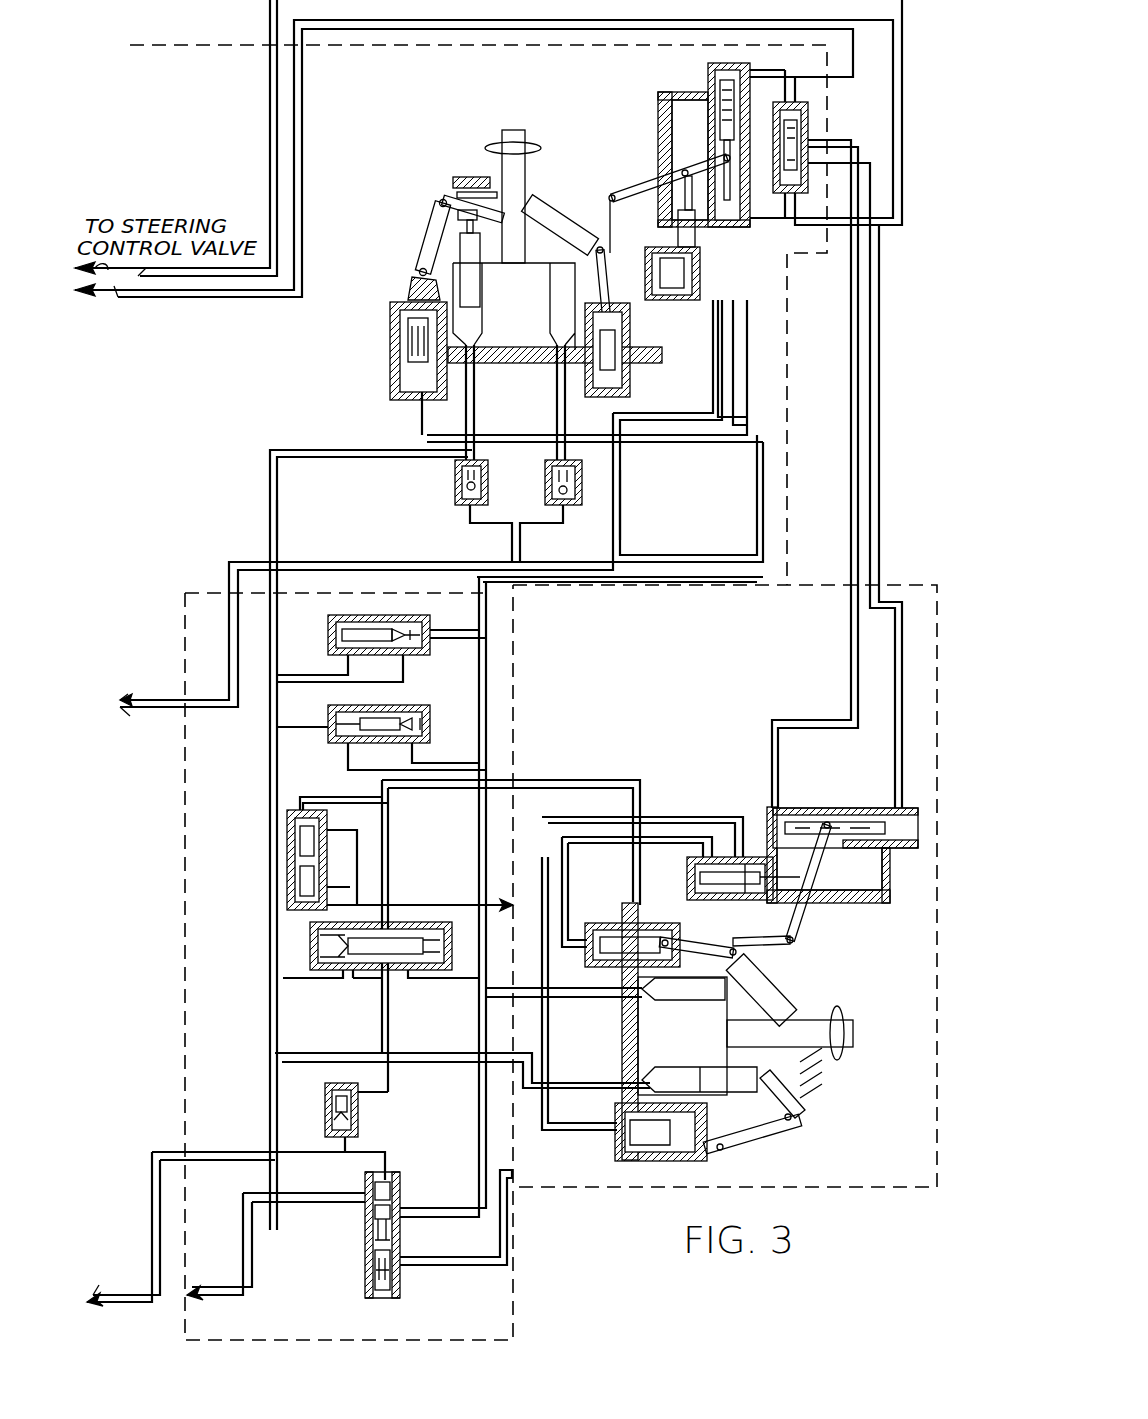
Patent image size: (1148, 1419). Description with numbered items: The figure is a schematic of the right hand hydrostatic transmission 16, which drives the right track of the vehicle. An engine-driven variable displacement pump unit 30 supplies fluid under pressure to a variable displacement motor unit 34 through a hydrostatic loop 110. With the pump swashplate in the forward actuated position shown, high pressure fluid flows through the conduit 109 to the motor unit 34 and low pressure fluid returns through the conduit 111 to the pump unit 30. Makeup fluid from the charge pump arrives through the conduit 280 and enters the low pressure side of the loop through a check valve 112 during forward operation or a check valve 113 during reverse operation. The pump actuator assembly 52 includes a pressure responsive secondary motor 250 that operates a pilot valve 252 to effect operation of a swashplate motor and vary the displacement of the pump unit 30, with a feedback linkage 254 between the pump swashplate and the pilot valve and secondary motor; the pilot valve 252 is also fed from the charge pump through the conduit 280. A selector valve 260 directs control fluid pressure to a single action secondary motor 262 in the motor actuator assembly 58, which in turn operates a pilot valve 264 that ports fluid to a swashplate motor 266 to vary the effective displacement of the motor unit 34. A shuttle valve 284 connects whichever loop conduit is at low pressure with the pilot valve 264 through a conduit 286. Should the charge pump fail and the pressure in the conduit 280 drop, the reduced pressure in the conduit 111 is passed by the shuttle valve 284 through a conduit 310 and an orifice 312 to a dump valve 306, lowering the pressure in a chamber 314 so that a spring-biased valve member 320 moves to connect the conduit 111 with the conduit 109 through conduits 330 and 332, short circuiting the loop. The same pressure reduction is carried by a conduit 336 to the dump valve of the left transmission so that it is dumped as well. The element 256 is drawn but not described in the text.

The right hand hydrostatic transmission 16 is at (415, 150).
The variable displacement pump unit 30 is at (410, 232).
The variable displacement motor unit 34 is at (838, 1118).
The pump actuator assembly 52 is at (638, 141).
The motor actuator assembly 58 is at (756, 845).
The conduit 109 is at (625, 502).
The hydrostatic loop 110 is at (258, 482).
The conduit 111 is at (278, 518).
The check valve 112 is at (457, 505).
The check valve 113 is at (580, 508).
The secondary motor 250 is at (705, 72).
The pilot valve 252 is at (677, 234).
The feedback linkage 254 is at (644, 181).
The valve 256 is at (403, 382).
The selector valve 260 is at (810, 125).
The secondary motor 262 is at (857, 800).
The pilot valve 264 is at (733, 858).
The swashplate motor 266 is at (592, 918).
The conduit 280 is at (758, 488).
The shuttle valve 284 is at (312, 952).
The conduit 286 is at (575, 780).
The dump valve 306 is at (411, 1216).
The conduit 310 is at (388, 1032).
The orifice 312 is at (385, 1126).
The chamber 314 is at (373, 1183).
The valve member 320 is at (373, 1217).
The conduit 330 is at (318, 1235).
The conduit 332 is at (410, 1215).
The conduit 336 is at (118, 1295).